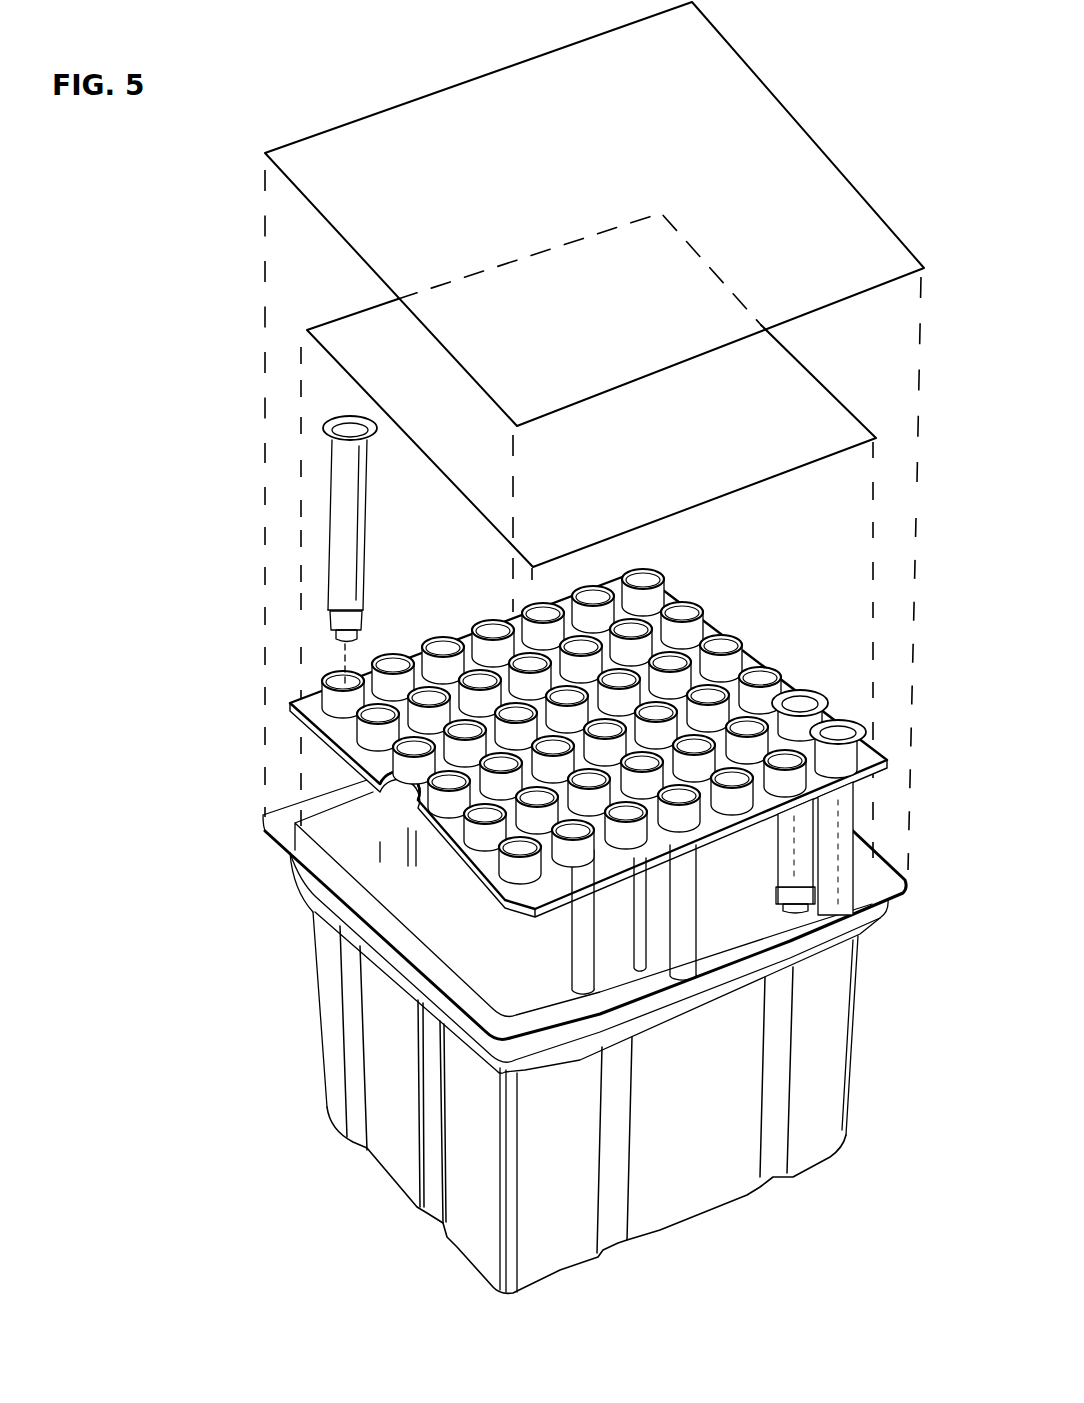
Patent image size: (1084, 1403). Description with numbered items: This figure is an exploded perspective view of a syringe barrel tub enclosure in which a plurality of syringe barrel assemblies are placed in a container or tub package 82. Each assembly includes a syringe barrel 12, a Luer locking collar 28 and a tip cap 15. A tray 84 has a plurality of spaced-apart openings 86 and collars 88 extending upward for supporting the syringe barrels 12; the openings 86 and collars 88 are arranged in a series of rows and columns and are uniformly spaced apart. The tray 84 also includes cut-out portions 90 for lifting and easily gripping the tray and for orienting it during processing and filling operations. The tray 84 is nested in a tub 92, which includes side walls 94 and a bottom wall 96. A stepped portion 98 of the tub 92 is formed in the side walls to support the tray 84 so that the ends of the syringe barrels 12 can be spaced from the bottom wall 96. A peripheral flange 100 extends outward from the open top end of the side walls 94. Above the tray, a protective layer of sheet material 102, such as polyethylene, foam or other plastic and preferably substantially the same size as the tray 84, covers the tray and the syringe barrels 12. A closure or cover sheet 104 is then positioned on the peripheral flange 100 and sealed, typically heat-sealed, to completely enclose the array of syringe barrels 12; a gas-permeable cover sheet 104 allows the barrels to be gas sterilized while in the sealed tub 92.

The syringe barrel 12 is at (594, 673).
The tip cap 15 is at (355, 639).
The Luer locking collar 28 is at (366, 618).
The tub package 82 is at (163, 734).
The tray 84 is at (588, 763).
The openings 86 is at (441, 648).
The collars 88 is at (745, 650).
The cut-out portions 90 is at (395, 806).
The tub 92 is at (314, 977).
The side walls 94 is at (393, 1140).
The bottom wall 96 is at (456, 1245).
The stepped portion 98 is at (335, 847).
The peripheral flange 100 is at (335, 880).
The sheet material 102 is at (343, 330).
The cover sheet 104 is at (391, 122).